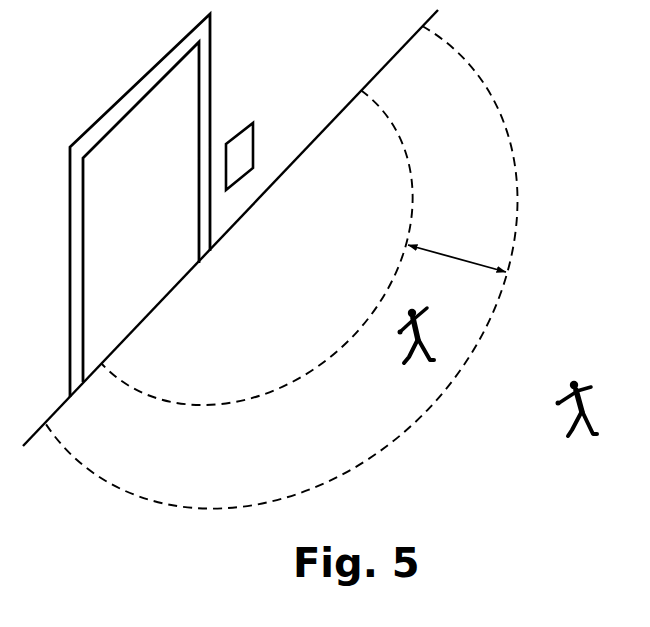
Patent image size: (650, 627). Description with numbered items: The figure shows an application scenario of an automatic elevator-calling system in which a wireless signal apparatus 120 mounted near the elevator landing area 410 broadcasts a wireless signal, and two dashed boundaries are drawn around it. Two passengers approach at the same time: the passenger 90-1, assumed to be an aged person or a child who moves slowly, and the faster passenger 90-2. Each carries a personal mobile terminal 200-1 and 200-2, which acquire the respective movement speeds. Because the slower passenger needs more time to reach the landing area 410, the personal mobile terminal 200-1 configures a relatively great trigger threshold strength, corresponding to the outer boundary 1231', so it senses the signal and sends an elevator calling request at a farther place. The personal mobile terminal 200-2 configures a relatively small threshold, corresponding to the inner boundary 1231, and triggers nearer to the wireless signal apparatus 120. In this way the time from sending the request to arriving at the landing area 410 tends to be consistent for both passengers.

The wireless signal apparatus 120 is at (244, 178).
The elevator landing area 410 is at (475, 136).
The boundary 1231 is at (330, 267).
The boundary 1231' is at (302, 247).
The passenger 90-1 is at (438, 299).
The personal mobile terminal 200-1 is at (400, 331).
The passenger 90-2 is at (591, 387).
The personal mobile terminal 200-2 is at (558, 402).